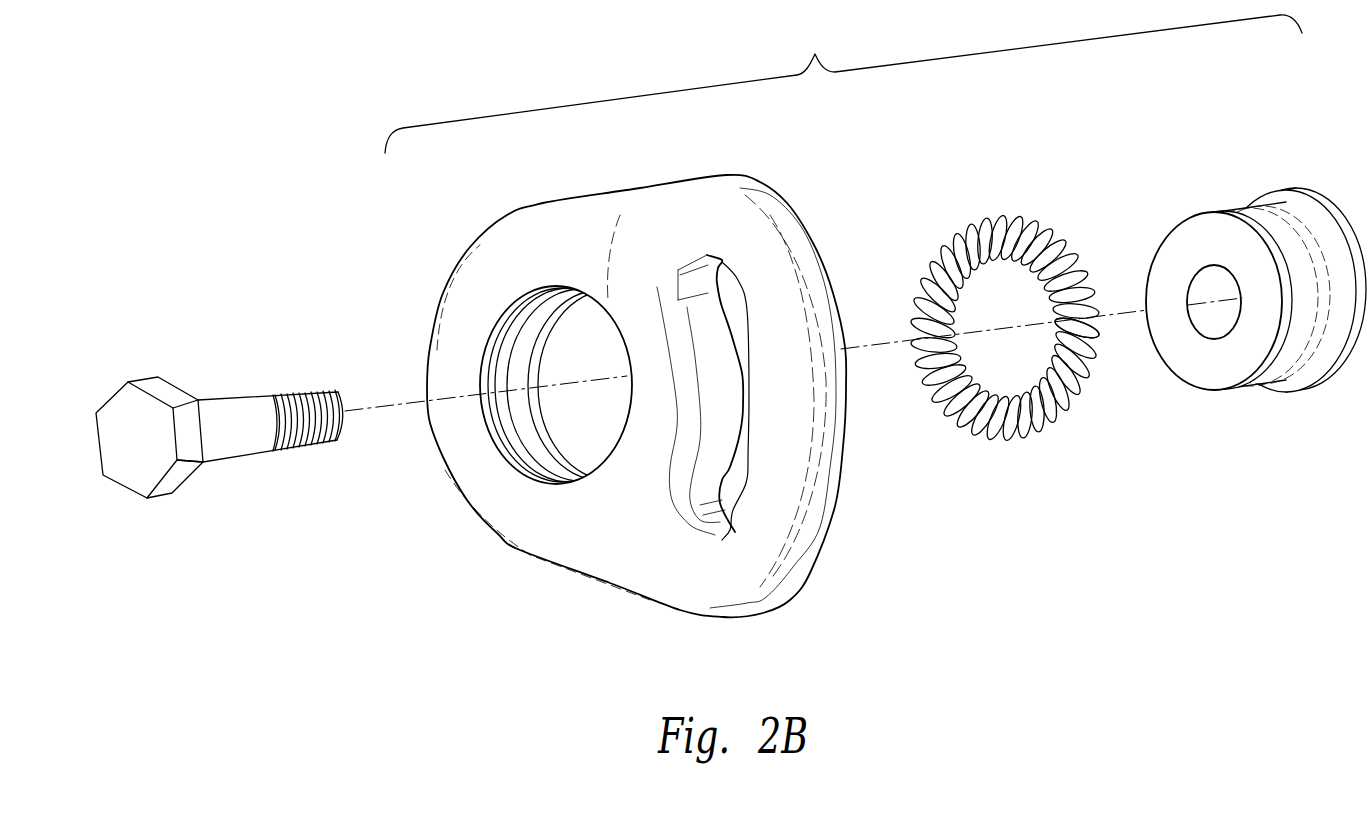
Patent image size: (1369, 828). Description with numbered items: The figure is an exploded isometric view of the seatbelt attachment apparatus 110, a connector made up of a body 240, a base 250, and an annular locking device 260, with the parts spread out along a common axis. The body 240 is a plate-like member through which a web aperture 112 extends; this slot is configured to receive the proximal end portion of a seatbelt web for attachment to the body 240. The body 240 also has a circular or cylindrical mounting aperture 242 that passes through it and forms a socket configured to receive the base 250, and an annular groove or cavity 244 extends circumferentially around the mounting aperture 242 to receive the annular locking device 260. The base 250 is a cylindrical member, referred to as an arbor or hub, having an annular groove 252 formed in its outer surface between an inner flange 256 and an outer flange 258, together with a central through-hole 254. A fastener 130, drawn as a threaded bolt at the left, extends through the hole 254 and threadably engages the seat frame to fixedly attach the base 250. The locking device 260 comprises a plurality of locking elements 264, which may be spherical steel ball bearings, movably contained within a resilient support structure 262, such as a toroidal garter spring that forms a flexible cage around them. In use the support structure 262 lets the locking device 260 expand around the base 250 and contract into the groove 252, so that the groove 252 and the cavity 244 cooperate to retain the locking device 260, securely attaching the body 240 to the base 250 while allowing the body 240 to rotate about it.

The apparatus 110 is at (815, 54).
The web aperture 112 is at (748, 483).
The fastener 130 is at (143, 477).
The body 240 is at (665, 228).
The mounting aperture 242 is at (483, 378).
The annular groove or cavity 244 is at (520, 449).
The base 250 is at (1235, 316).
The annular groove 252 is at (1325, 325).
The central through-hole 254 is at (1192, 270).
The inner flange 256 is at (1352, 234).
The outer flange 258 is at (1282, 355).
The annular locking device 260 is at (1002, 282).
The resilient support structure 262 is at (1043, 230).
The locking elements 264 is at (1082, 278).